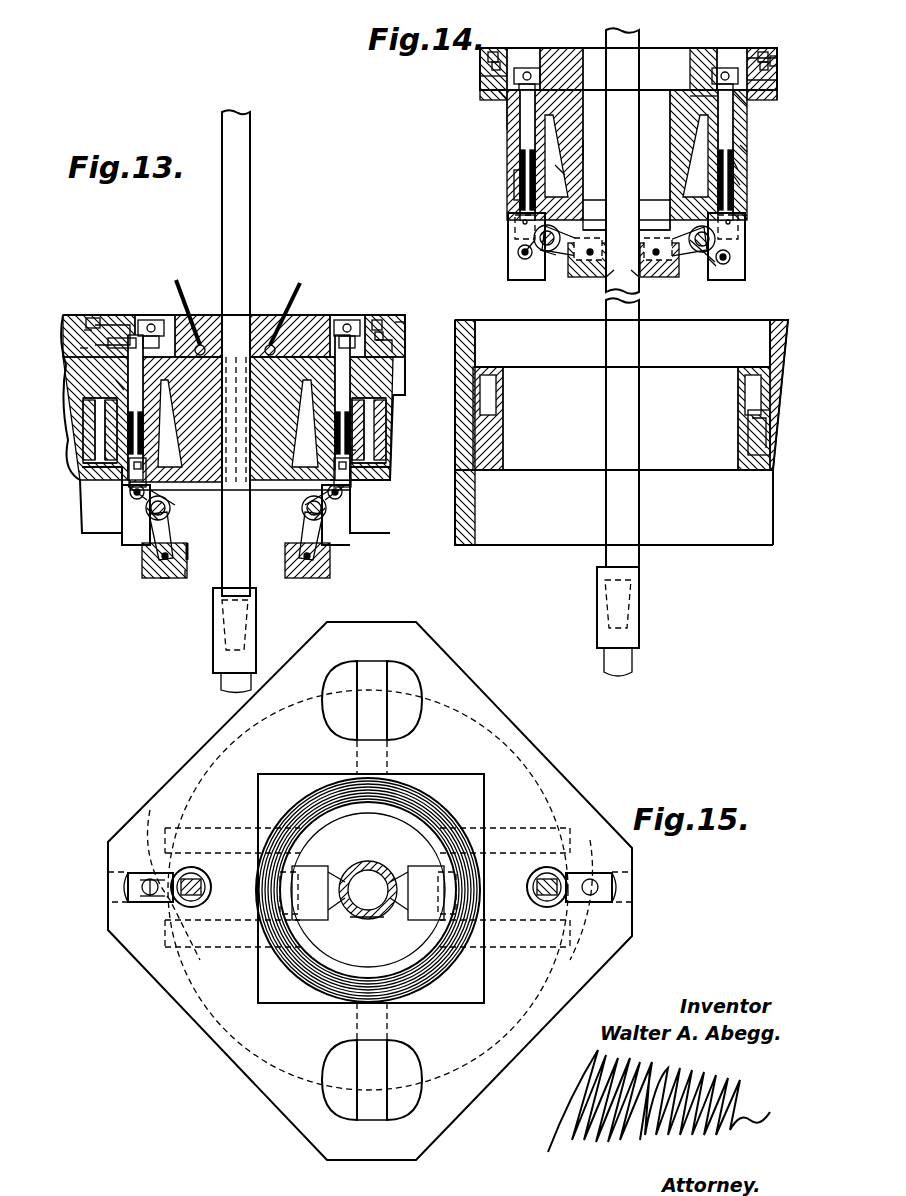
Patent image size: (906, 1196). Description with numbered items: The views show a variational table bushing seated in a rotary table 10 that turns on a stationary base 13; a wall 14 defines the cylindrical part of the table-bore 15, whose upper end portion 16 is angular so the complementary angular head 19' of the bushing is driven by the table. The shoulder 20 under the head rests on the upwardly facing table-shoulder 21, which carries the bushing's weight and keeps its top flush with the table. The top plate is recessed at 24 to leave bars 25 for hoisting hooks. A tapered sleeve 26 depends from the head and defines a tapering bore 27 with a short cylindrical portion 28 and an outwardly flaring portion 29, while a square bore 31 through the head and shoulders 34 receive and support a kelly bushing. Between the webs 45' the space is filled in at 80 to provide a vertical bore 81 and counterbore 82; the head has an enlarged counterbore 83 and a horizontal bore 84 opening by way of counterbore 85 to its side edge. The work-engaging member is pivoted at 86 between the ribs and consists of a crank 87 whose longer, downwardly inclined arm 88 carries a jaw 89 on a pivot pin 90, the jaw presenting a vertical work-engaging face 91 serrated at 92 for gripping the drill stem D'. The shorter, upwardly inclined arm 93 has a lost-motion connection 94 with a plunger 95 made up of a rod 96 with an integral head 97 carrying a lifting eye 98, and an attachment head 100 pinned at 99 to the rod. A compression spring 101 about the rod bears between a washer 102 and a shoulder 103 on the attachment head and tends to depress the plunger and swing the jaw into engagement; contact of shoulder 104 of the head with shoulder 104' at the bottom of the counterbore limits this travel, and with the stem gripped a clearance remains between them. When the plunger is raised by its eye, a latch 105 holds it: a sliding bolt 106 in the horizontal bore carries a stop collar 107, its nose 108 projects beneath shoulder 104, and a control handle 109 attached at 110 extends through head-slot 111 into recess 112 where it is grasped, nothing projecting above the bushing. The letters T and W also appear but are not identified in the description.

In FIG. 13, the rotary table 10 is at (67, 314).
In FIG. 14, the rotary table 10 is at (794, 318).
In FIG. 13, the stationary base 13 is at (366, 440).
In FIG. 14, the stationary base 13 is at (766, 460).
In FIG. 14, the wall 14 is at (505, 480).
In FIG. 14, the table-bore 15 is at (563, 478).
In FIG. 14, the upper end portion of the bore 16 is at (735, 347).
In FIG. 13, the head 19' is at (107, 301).
In FIG. 14, the head 19' is at (787, 60).
In FIG. 15, the head 19' is at (370, 891).
In FIG. 14, the shoulder 20 is at (777, 98).
In FIG. 14, the table-shoulder 21 is at (503, 367).
In FIG. 15, the recess 24 is at (343, 712).
In FIG. 15, the bars 25 is at (372, 698).
In FIG. 14, the sleeve 26 is at (585, 150).
In FIG. 14, the tapering bore 27 is at (560, 170).
In FIG. 15, the tapering bore 27 is at (483, 832).
In FIG. 14, the cylindrical bore portion 28 is at (598, 189).
In FIG. 14, the outwardly flaring portion 29 is at (654, 209).
In FIG. 14, the bore portion 31 is at (590, 60).
In FIG. 15, the shoulders 34 is at (478, 795).
In FIG. 13, the webs 45' is at (233, 535).
In FIG. 14, the webs 45' is at (602, 279).
In FIG. 15, the webs 45' is at (385, 882).
In FIG. 13, the filled-in portion 80 is at (118, 385).
In FIG. 14, the filled-in portion 80 is at (745, 150).
In FIG. 13, the vertical bore 81 is at (88, 405).
In FIG. 13, the counterbore 82 is at (96, 450).
In FIG. 14, the counterbore 82 is at (520, 185).
In FIG. 13, the enlarged counterbore 83 is at (145, 350).
In FIG. 14, the enlarged counterbore 83 is at (728, 58).
In FIG. 15, the enlarged counterbore 83 is at (206, 902).
In FIG. 13, the horizontal bore 84 is at (84, 352).
In FIG. 15, the horizontal bore 84 is at (125, 900).
In FIG. 13, the counterbore 85 is at (88, 335).
In FIG. 15, the counterbore 85 is at (130, 896).
In FIG. 13, the pivot 86 is at (160, 553).
In FIG. 14, the pivot 86 is at (712, 264).
In FIG. 13, the crank 87 is at (172, 511).
In FIG. 14, the crank 87 is at (624, 238).
In FIG. 13, the crank arm 88 is at (176, 536).
In FIG. 14, the crank arm 88 is at (566, 256).
In FIG. 15, the crank arm 88 is at (300, 870).
In FIG. 13, the jaw 89 is at (167, 582).
In FIG. 14, the jaw 89 is at (583, 275).
In FIG. 15, the jaw 89 is at (352, 862).
In FIG. 13, the pivot pin 90 is at (160, 578).
In FIG. 14, the pivot pin 90 is at (656, 275).
In FIG. 13, the work-engaging face 91 is at (187, 578).
In FIG. 15, the work-engaging face 91 is at (389, 920).
In FIG. 13, the serrations 92 is at (190, 560).
In FIG. 14, the serrations 92 is at (616, 278).
In FIG. 13, the crank arm 93 is at (145, 505).
In FIG. 14, the crank arm 93 is at (722, 260).
In FIG. 13, the lost-motion connection 94 is at (130, 493).
In FIG. 14, the lost-motion connection 94 is at (724, 262).
In FIG. 13, the plunger 95 is at (96, 425).
In FIG. 14, the plunger 95 is at (741, 165).
In FIG. 13, the rod 96 is at (345, 385).
In FIG. 14, the rod 96 is at (527, 135).
In FIG. 13, the head 97 is at (352, 335).
In FIG. 14, the head 97 is at (528, 76).
In FIG. 15, the head 97 is at (192, 905).
In FIG. 13, the lifting eye 98 is at (346, 322).
In FIG. 14, the lifting eye 98 is at (520, 70).
In FIG. 15, the lifting eye 98 is at (200, 880).
In FIG. 13, the pin 99 is at (346, 466).
In FIG. 14, the pin 99 is at (524, 228).
In FIG. 13, the attachment head 100 is at (352, 478).
In FIG. 14, the attachment head 100 is at (520, 240).
In FIG. 13, the compression spring 101 is at (374, 420).
In FIG. 14, the compression spring 101 is at (524, 205).
In FIG. 13, the washer 102 is at (372, 405).
In FIG. 14, the washer 102 is at (736, 180).
In FIG. 13, the shoulder 103 is at (356, 452).
In FIG. 14, the shoulder 103 is at (746, 215).
In FIG. 13, the shoulder 104 is at (286, 319).
In FIG. 14, the shoulder 104 is at (771, 107).
In FIG. 13, the shoulder 104' is at (418, 349).
In FIG. 14, the shoulder 104' is at (684, 105).
In FIG. 13, the latch 105 is at (128, 311).
In FIG. 15, the latch 105 is at (152, 862).
In FIG. 13, the sliding bolt 106 is at (382, 345).
In FIG. 14, the sliding bolt 106 is at (502, 95).
In FIG. 13, the stop collar 107 is at (402, 332).
In FIG. 14, the stop collar 107 is at (481, 80).
In FIG. 15, the stop collar 107 is at (140, 890).
In FIG. 13, the nose 108 is at (178, 325).
In FIG. 14, the nose 108 is at (505, 92).
In FIG. 13, the control handle 109 is at (375, 322).
In FIG. 14, the control handle 109 is at (492, 54).
In FIG. 15, the control handle 109 is at (157, 896).
In FIG. 13, the attachment point 110 is at (92, 318).
In FIG. 14, the attachment point 110 is at (778, 62).
In FIG. 14, the head-slot 111 is at (722, 75).
In FIG. 15, the head-slot 111 is at (150, 906).
In FIG. 13, the enlarged recess 112 is at (378, 335).
In FIG. 14, the enlarged recess 112 is at (762, 62).
In FIG. 15, the enlarged recess 112 is at (130, 880).
In FIG. 13, the drill stem D' is at (260, 353).
In FIG. 14, the drill stem D' is at (640, 297).
In FIG. 15, the drill stem D' is at (368, 890).
In FIG. 13, the tool T is at (265, 630).
In FIG. 14, the tool T is at (648, 613).
In FIG. 13, the workpiece W is at (225, 372).